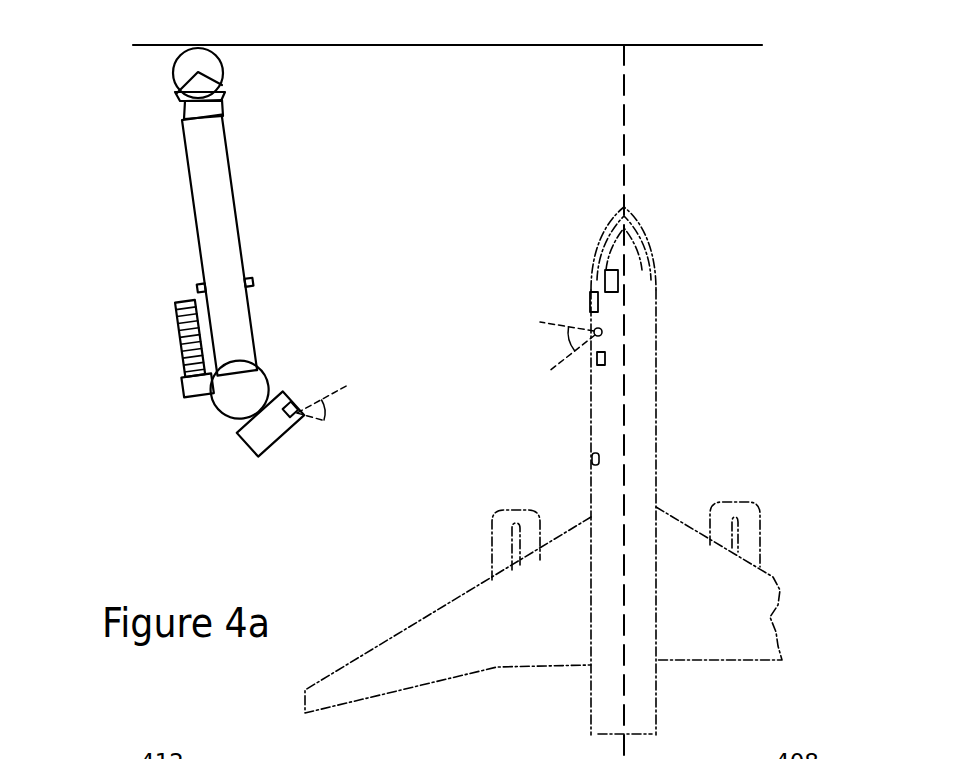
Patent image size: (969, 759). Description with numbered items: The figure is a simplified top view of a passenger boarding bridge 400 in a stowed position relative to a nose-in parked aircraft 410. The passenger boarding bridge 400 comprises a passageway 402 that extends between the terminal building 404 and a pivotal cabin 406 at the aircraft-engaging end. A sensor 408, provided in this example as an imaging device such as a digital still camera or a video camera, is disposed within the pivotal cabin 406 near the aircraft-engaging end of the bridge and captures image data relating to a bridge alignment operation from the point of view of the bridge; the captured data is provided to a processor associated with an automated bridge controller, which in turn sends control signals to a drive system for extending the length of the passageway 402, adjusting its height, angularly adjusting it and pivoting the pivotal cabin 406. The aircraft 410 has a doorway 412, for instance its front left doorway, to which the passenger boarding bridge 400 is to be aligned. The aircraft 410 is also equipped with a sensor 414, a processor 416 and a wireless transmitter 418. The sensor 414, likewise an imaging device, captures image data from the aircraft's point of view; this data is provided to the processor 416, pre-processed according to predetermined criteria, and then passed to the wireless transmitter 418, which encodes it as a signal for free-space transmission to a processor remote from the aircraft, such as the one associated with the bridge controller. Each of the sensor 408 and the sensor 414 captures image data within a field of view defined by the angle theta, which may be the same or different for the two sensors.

The passenger boarding bridge 400 is at (217, 288).
The passageway 402 is at (193, 215).
The terminal building 404 is at (583, 26).
The pivotal cabin 406 is at (258, 443).
The sensor 408 is at (305, 413).
The aircraft 410 is at (581, 402).
The doorway 412 is at (598, 307).
The sensor 414 is at (600, 336).
The processor 416 is at (619, 283).
The wireless transmitter 418 is at (597, 360).